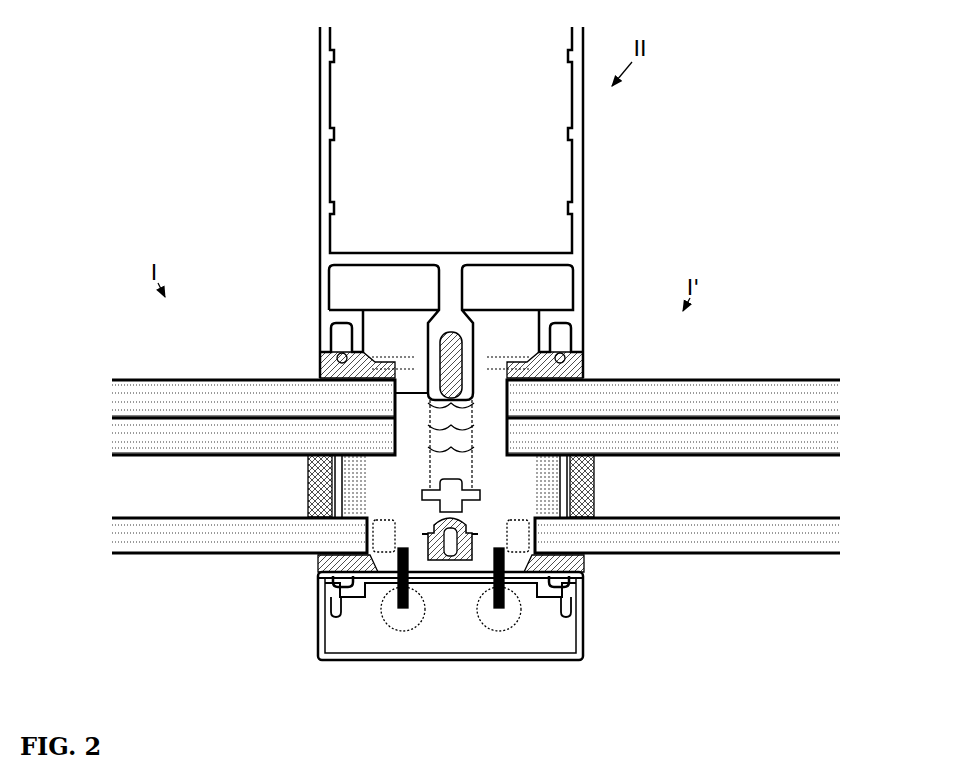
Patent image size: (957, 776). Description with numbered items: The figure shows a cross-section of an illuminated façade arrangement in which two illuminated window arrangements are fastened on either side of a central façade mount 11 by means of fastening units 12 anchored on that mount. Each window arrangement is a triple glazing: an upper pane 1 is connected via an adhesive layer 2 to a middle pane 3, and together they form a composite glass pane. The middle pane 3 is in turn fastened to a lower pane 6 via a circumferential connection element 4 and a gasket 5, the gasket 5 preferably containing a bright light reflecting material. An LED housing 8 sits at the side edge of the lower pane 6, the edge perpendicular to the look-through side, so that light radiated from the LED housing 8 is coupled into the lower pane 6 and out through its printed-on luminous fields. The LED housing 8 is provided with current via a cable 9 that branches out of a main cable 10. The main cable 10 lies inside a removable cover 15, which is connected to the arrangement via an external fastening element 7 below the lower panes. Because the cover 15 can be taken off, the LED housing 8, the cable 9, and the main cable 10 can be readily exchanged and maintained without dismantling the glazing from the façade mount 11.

The upper pane 1 is at (203, 374).
The adhesive layer 2 is at (109, 418).
The middle pane 3 is at (103, 436).
The circumferential connection element 4 is at (305, 488).
The gasket 5 is at (372, 488).
The lower pane 6 is at (103, 534).
The external fastening element 7 is at (321, 568).
The LED housing 8 is at (507, 518).
The cable 9 is at (581, 580).
The main cable 10 is at (506, 618).
The façade mount 11 is at (309, 301).
The fastening units 12 is at (317, 365).
The removable cover 15 is at (317, 619).